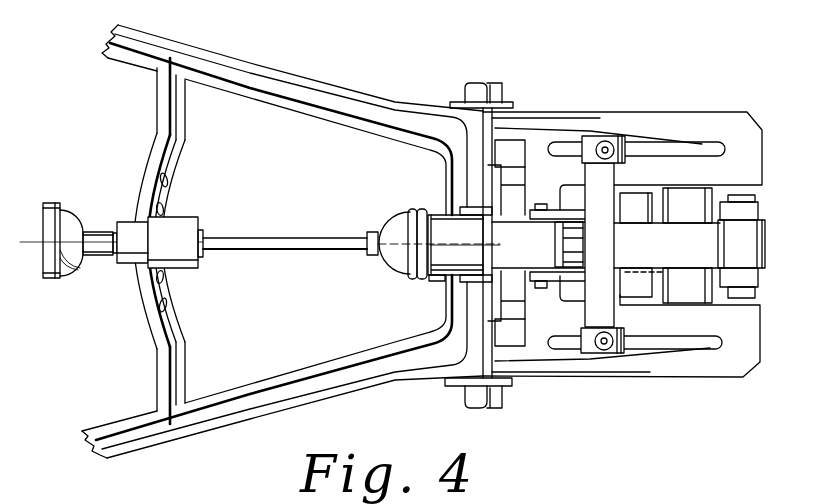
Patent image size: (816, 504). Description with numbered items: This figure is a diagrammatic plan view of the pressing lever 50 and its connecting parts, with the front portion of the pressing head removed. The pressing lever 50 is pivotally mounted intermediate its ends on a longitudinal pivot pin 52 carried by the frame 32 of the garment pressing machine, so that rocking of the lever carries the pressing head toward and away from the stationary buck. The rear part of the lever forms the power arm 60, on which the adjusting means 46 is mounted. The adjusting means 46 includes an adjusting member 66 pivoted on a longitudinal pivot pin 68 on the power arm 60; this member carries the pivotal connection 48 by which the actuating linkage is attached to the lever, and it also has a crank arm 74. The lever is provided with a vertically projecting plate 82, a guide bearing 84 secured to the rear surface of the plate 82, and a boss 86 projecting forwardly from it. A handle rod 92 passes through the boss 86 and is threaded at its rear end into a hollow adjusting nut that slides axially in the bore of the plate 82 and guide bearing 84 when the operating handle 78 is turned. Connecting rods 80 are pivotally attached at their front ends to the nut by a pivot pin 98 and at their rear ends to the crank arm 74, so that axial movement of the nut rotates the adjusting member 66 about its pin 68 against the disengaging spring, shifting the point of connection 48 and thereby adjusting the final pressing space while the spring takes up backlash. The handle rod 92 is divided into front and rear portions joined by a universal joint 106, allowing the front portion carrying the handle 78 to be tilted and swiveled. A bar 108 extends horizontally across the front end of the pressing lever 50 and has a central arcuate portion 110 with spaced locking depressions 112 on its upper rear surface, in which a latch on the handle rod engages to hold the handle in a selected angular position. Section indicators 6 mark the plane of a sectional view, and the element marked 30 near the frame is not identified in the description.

The section line 6- 6 is at (24, 225).
The base body 30 is at (645, 383).
The frame 32 is at (682, 378).
The adjusting means 46 is at (663, 262).
The point of connection 48 is at (736, 196).
The pressing lever 50 is at (362, 97).
The longitudinal pivot pin 52 is at (485, 402).
The power arm 60 is at (598, 112).
The adjusting member 66 is at (707, 263).
The longitudinal pivot pin 68 is at (688, 188).
The crank arm 74 is at (612, 232).
The operating handle 78 is at (68, 218).
The connecting rod 80 is at (560, 212).
The plate 82 is at (488, 198).
The guide bearing 84 is at (528, 258).
The boss 86 is at (443, 272).
The handle rod 92 is at (259, 240).
The pivot pin 98 is at (545, 207).
The universal connection 106 is at (413, 210).
The bar 108 is at (187, 116).
The arcuate portion 110 is at (180, 166).
The locking depressions 112 is at (166, 208).